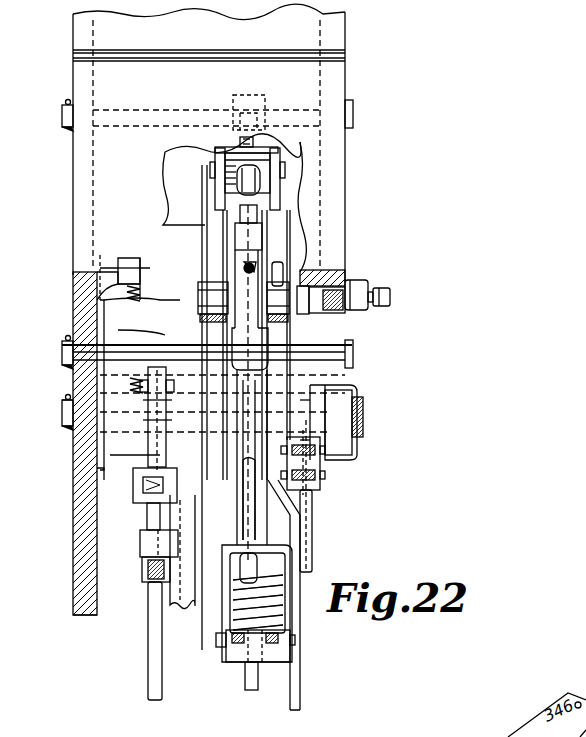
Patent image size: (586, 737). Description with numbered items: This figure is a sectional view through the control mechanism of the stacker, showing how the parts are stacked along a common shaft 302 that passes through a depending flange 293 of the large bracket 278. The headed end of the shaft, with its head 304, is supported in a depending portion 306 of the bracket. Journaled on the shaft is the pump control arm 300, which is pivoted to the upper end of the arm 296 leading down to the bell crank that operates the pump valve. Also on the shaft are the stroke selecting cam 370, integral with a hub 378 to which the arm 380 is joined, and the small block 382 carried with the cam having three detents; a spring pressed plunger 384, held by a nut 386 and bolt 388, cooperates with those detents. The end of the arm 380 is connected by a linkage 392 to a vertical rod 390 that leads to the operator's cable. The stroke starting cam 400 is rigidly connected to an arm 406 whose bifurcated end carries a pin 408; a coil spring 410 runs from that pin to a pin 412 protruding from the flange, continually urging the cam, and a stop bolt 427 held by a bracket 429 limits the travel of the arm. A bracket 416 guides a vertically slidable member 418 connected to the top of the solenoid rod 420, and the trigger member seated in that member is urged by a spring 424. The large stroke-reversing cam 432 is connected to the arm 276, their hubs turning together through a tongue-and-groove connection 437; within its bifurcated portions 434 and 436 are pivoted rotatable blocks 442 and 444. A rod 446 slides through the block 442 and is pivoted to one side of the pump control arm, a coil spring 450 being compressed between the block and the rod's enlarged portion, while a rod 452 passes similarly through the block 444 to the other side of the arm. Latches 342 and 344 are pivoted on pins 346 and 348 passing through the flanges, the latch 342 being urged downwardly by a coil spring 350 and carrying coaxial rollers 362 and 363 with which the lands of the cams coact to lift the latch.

The arm 276 is at (108, 448).
The large bracket 278 is at (342, 170).
The depending flange 293 is at (97, 522).
The arm 296 is at (301, 677).
The pump control arm 300 is at (253, 460).
The shaft 302 is at (66, 398).
The head 304 is at (360, 430).
The depending portion 306 is at (345, 455).
The latch 342 is at (218, 310).
The latch 344 is at (240, 100).
The pin 346 is at (66, 341).
The pin 348 is at (62, 128).
The coil spring 350 is at (240, 262).
The roller 362 is at (262, 292).
The roller 363 is at (282, 280).
The stroke selecting cam 370 is at (350, 362).
The hub 378 is at (348, 394).
The arm 380 is at (364, 415).
The small block 382 is at (312, 320).
The spring pressed plunger 384 is at (350, 314).
The nut 386 is at (360, 283).
The bolt 388 is at (385, 292).
The vertical rod 390 is at (313, 534).
The linkage 392 is at (325, 472).
The stroke starting cam 400 is at (207, 210).
The arm 406 is at (170, 425).
The pin 408 is at (66, 415).
The coil spring 410 is at (138, 284).
The pin 412 is at (133, 260).
The bracket 416 is at (140, 558).
The vertically slidable member 418 is at (110, 500).
The solenoid rod 420 is at (150, 676).
The spring 424 is at (143, 487).
The stop member or bolt 427 is at (147, 380).
The bracket 429 is at (142, 298).
The stroke-reversing cam 432 is at (222, 531).
The bifurcated portion 434 is at (280, 152).
The bifurcated portion 436 is at (228, 650).
The tongue-and-groove connection 437 is at (100, 470).
The rotatable block 442 is at (240, 652).
The rotatable block 444 is at (233, 150).
The rod 446 is at (253, 690).
The coil spring 450 is at (268, 590).
The rod 452 is at (255, 138).